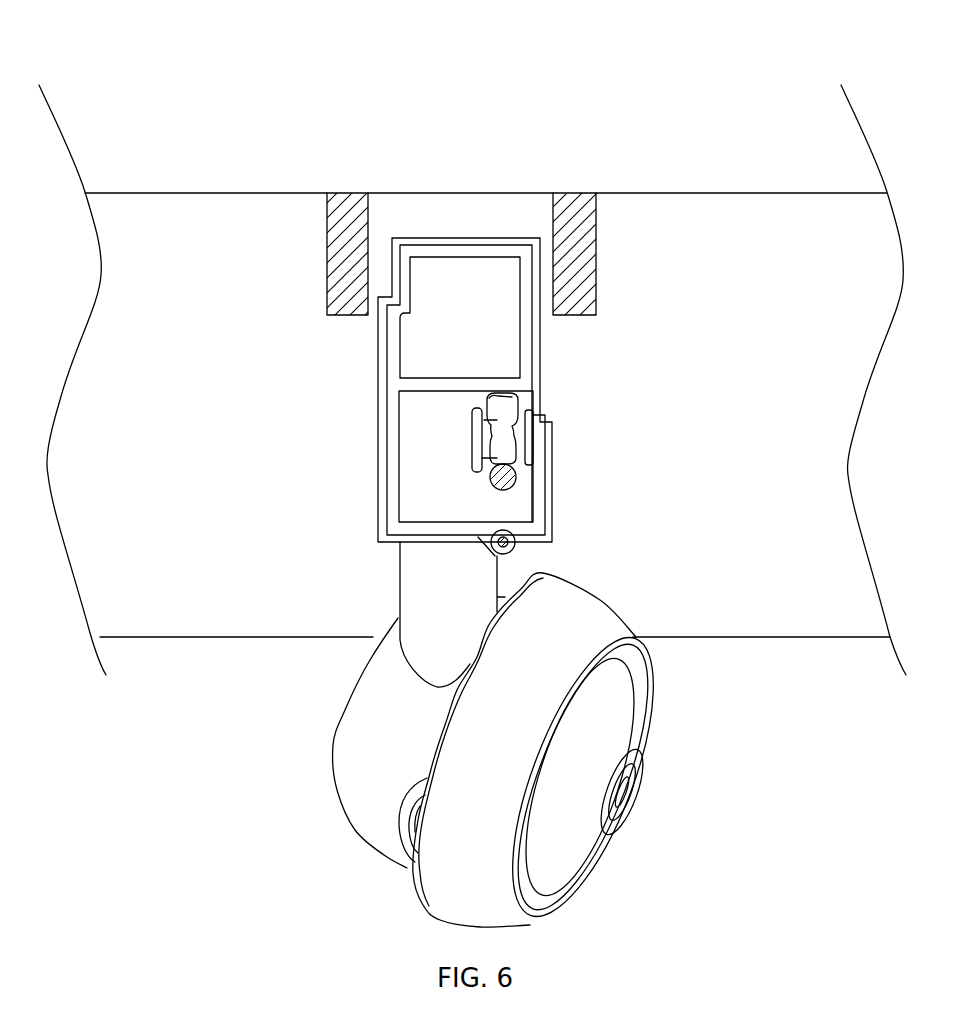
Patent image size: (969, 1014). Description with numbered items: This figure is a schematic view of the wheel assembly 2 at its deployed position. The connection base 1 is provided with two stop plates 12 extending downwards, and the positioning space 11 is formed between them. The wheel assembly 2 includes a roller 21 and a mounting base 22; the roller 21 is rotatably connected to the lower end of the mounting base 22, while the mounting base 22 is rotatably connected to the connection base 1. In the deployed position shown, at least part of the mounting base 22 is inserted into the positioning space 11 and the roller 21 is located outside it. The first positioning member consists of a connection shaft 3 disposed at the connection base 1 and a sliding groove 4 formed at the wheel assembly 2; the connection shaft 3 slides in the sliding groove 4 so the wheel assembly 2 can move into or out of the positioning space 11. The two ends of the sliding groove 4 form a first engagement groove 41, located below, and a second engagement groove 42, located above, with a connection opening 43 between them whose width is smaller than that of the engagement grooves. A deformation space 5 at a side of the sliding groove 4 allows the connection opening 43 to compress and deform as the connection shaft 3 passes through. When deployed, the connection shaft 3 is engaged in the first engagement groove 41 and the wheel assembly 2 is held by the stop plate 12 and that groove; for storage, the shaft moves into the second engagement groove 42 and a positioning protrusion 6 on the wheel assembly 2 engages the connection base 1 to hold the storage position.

The connection base 1 is at (160, 208).
The positioning space 11 is at (522, 210).
The stop plate 12 is at (343, 205).
The wheel assembly 2 is at (450, 737).
The roller 21 is at (360, 770).
The mounting base 22 is at (460, 245).
The connection shaft 3 is at (517, 470).
The sliding groove 4 is at (464, 416).
The first engagement groove 41 is at (480, 480).
The second engagement groove 42 is at (502, 405).
The connection opening 43 is at (480, 420).
The deformation space 5 is at (472, 438).
The positioning protrusion 6 is at (530, 537).